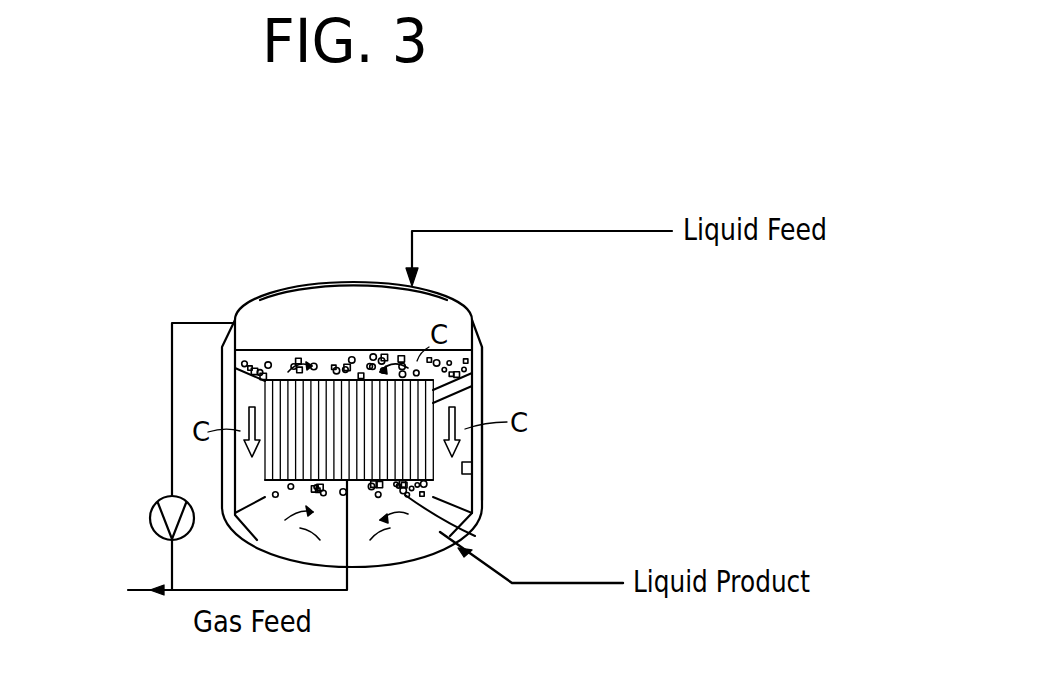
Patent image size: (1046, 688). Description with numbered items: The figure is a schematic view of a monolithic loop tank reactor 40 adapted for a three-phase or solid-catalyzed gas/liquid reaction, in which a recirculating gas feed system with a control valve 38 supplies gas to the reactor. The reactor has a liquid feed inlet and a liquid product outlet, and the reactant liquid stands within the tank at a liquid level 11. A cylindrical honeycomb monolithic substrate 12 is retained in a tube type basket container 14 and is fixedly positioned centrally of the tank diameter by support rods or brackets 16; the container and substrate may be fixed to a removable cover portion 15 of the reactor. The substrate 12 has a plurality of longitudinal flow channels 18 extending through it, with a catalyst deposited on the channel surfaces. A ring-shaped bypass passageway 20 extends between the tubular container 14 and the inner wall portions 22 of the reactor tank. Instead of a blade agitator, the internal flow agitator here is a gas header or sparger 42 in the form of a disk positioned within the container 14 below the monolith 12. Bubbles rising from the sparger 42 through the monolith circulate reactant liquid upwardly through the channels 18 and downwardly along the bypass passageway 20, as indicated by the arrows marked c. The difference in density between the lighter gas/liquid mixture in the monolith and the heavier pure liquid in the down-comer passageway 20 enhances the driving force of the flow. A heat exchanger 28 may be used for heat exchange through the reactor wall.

The monolithic loop reactor embodiment 40 is at (243, 283).
The removable cover portion 15 is at (340, 282).
The heat exchanger 28 is at (484, 360).
The liquid level 11 is at (349, 349).
The honeycomb monolithic substrate 12 is at (368, 363).
The tube type basket container 14 is at (474, 388).
The longitudinal flow channels 18 is at (307, 455).
The annular bypass passageway 20 is at (247, 398).
The control valve 38 is at (150, 518).
The support rods or brackets 16 is at (256, 541).
The inner wall portions 22 is at (457, 505).
The gas header or sparger 42 is at (462, 531).